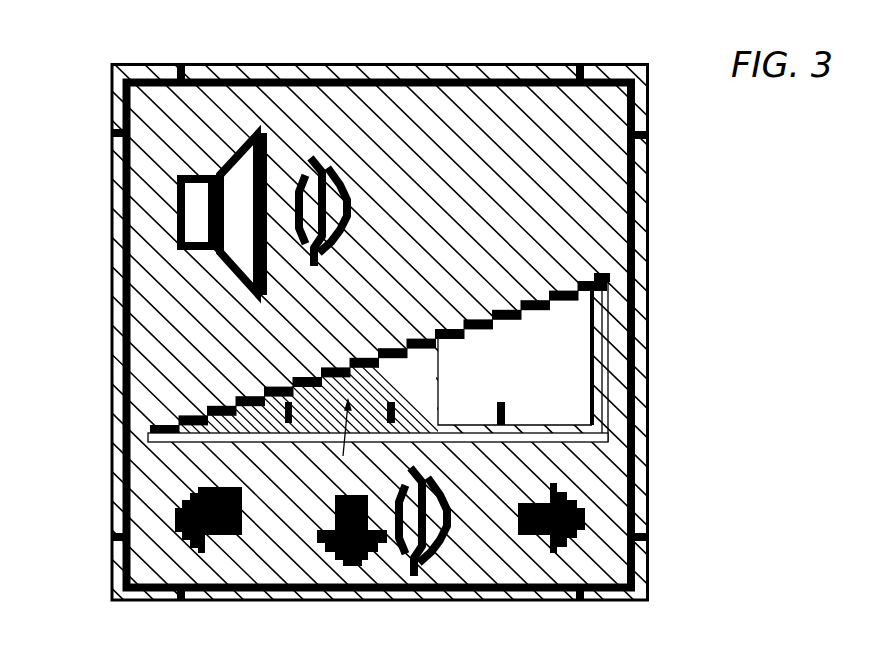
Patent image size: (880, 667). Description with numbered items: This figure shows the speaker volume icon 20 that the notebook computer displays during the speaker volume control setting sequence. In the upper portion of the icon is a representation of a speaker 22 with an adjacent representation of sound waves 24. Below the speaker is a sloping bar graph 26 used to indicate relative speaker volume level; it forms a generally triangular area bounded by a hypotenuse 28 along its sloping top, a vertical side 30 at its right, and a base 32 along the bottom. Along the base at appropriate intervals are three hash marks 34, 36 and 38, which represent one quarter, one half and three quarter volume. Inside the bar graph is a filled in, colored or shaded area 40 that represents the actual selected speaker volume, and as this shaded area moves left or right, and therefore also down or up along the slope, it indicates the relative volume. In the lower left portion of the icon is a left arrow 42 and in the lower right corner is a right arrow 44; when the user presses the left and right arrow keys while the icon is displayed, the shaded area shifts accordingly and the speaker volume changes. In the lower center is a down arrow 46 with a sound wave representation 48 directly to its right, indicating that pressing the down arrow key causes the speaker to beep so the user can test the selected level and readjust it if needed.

The speaker volume icon 20 is at (108, 262).
The speaker 22 is at (234, 133).
The sound waves 24 is at (333, 165).
The sloping bar graph 26 is at (280, 380).
The hypotenuse 28 is at (396, 345).
The vertical side 30 is at (603, 348).
The base 32 is at (443, 434).
The hash mark 34 is at (287, 426).
The hash mark 36 is at (403, 407).
The hash mark 38 is at (506, 405).
The shaded area 40 is at (341, 441).
The left arrow 42 is at (228, 537).
The right arrow 44 is at (537, 537).
The down arrow 46 is at (331, 553).
The sound wave representation 48 is at (413, 562).